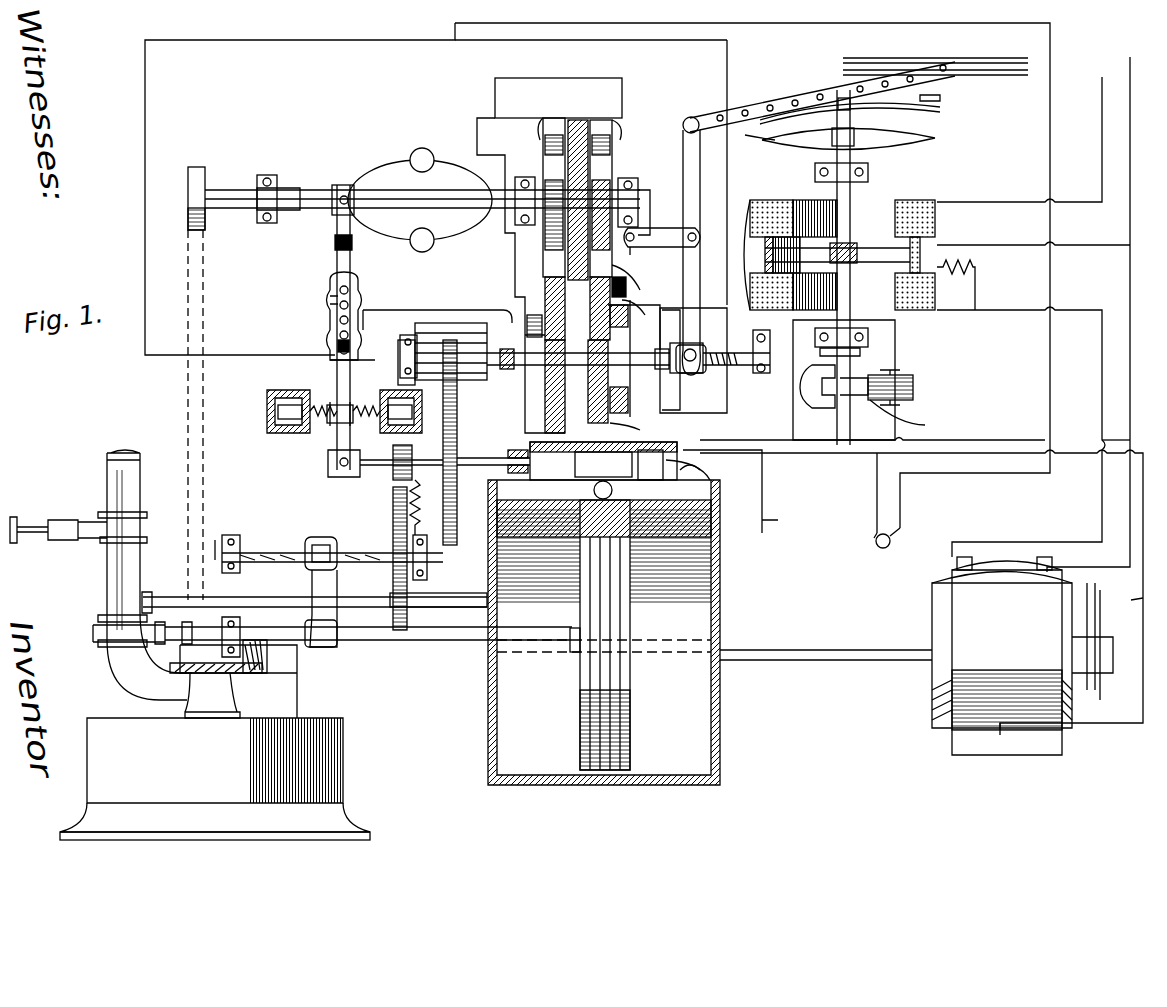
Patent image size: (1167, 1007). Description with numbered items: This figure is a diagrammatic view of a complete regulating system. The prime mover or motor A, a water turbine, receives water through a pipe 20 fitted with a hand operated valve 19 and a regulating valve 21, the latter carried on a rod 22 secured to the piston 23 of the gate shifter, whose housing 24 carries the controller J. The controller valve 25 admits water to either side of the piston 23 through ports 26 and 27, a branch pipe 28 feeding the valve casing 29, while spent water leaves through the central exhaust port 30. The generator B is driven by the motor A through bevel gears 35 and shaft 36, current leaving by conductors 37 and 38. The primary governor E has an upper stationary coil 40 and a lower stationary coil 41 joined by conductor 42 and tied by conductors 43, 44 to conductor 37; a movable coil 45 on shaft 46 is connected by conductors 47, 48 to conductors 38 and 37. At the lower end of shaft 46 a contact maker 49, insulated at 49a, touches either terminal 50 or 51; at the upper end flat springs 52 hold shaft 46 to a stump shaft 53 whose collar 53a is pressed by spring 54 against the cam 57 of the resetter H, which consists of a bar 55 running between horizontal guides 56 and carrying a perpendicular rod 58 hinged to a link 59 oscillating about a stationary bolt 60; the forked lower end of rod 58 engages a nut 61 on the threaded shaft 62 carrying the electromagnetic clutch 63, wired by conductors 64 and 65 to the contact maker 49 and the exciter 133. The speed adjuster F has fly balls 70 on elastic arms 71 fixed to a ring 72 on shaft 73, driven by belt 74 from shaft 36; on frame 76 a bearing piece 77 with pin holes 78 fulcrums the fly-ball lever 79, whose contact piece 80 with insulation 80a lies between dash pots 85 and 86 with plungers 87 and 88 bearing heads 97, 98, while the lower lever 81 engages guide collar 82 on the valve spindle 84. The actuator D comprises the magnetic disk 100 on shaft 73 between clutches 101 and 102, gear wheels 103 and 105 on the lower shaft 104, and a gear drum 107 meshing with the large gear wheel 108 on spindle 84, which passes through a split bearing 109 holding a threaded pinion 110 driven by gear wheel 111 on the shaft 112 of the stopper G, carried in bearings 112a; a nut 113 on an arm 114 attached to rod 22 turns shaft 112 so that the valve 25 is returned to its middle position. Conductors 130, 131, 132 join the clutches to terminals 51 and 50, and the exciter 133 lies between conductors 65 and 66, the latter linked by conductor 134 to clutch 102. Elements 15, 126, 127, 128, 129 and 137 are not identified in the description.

The arm 15 is at (332, 215).
The hand operated valve 19 is at (45, 523).
The pipe 20 is at (107, 545).
The regulating valve 21 is at (98, 632).
The rod 22 is at (432, 640).
The piston 23 is at (720, 578).
The housing 24 is at (720, 553).
The valve 25 is at (690, 465).
The port 26 is at (720, 500).
The port 27 is at (500, 520).
The branch pipe 28 is at (465, 565).
The valve casing 29 is at (693, 430).
The exhaust port 30 is at (710, 474).
The bevel gears 35 is at (260, 672).
The shaft 36 is at (862, 642).
The conductor 37 is at (1102, 372).
The conductor 38 is at (1130, 320).
The upper stationary coil 40 is at (915, 190).
The lower stationary coil 41 is at (930, 290).
The conductor 42 is at (748, 220).
The conductor 43 is at (1015, 310).
The conductor 44 is at (995, 202).
The movable coil 45 is at (920, 240).
The shaft 46 is at (837, 193).
The conductor 47 is at (1092, 245).
The conductor 48 is at (978, 273).
The contact maker 49 is at (833, 378).
The insulation 49a is at (862, 362).
The terminal 50 is at (889, 387).
The terminal 51 is at (911, 419).
The flat springs 52 is at (915, 135).
The stump shaft 53 is at (856, 112).
The collar 53a is at (843, 98).
The spring 54 is at (910, 105).
The bar 55 is at (757, 105).
The horizontal guides 56 is at (988, 77).
The adjusting cam 57 is at (760, 126).
The perpendicular rod 58 is at (683, 130).
The link 59 is at (655, 230).
The stationary bolt 60 is at (662, 252).
The nut 61 is at (705, 355).
The threaded shaft 62 is at (738, 356).
The electromagnetic clutch 63 is at (635, 290).
The conductor 64 is at (693, 360).
The conductor 65 is at (1003, 447).
The conductor 66 is at (1131, 600).
The fly balls 70 is at (418, 250).
The elastic arms 71 is at (465, 237).
The ring 72 is at (420, 200).
The horizontal shaft 73 is at (228, 190).
The belt connection 74 is at (205, 330).
The frame 76 is at (450, 322).
The flat bearing piece 77 is at (360, 290).
The pin holes 78 is at (330, 296).
The fly-ball lever 79 is at (352, 240).
The contact piece 80 is at (340, 380).
The insulation 80a is at (340, 352).
The lower lever 81 is at (330, 445).
The guide collar 82 is at (328, 465).
The valve spindle 84 is at (490, 455).
The dash pot 85 is at (278, 413).
The dash pot 86 is at (392, 390).
The plunger 87 is at (270, 432).
The plunger 88 is at (430, 380).
The insulated metallic head 97 is at (330, 425).
The insulated metallic head 98 is at (352, 398).
The disk 100 is at (590, 120).
The electromagnetic clutch 101 is at (610, 170).
The electromagnetic clutch 102 is at (545, 163).
The gear wheel 103 is at (577, 308).
The lower shaft 104 is at (500, 322).
The gear wheel 105 is at (577, 366).
The gear drum 107 is at (435, 310).
The large gear wheel 108 is at (495, 368).
The split bearing 109 is at (401, 446).
The pinion 110 is at (390, 458).
The gear wheel 111 is at (332, 547).
The shaft 112 is at (248, 550).
The bearings 112a is at (222, 535).
The nut 113 is at (305, 565).
The arm 114 is at (337, 582).
The wire 126 is at (746, 491).
The gear 127 is at (460, 510).
The wire 128 is at (232, 36).
The wire 129 is at (785, 345).
The conductor 130 is at (727, 280).
The conductor 131 is at (560, 78).
The conductor 132 is at (596, 348).
The exciter 133 is at (878, 550).
The conductor 134 is at (1050, 48).
The spring 137 is at (410, 490).
The motor A is at (215, 779).
The electric generator B is at (1022, 656).
The actuator D is at (557, 206).
The primary governor E is at (955, 159).
The secondary governor F is at (385, 132).
The stopper G is at (293, 520).
The resetter H is at (644, 357).
The controller J is at (650, 465).